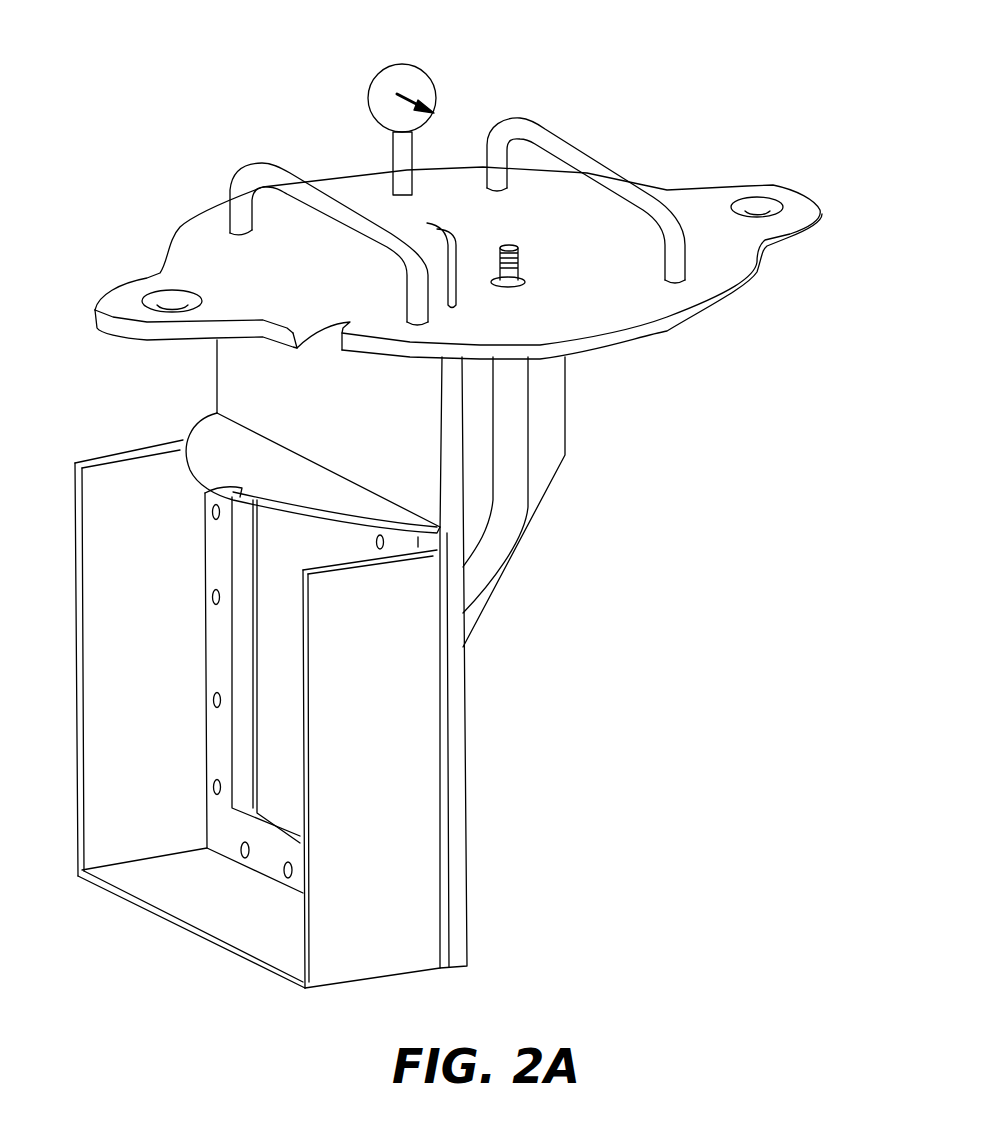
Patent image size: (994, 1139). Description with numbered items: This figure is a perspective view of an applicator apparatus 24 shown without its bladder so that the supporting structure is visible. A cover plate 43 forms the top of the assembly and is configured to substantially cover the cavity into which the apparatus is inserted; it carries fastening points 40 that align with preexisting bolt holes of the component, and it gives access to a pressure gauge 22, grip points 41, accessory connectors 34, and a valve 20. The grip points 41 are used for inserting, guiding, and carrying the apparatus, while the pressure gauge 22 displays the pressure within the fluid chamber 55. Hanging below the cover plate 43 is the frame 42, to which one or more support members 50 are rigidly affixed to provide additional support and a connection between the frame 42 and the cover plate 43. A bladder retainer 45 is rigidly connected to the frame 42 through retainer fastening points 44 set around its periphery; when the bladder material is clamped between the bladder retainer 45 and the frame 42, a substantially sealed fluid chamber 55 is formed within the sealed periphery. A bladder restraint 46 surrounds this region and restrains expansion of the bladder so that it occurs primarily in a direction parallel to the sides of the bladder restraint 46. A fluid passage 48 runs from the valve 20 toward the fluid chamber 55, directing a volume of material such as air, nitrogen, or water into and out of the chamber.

The valve 20 is at (515, 270).
The pressure gauge 22 is at (425, 75).
The applicator apparatus 24 is at (646, 44).
The accessory connectors 34 is at (445, 248).
The fastening points 40 is at (172, 297).
The grip points 41 is at (597, 162).
The frame 42 is at (457, 773).
The cover plate 43 is at (727, 300).
The retainer fastening points 44 is at (214, 787).
The bladder retainer 45 is at (212, 822).
The bladder restraint 46 is at (116, 544).
The fluid passage 48 is at (512, 545).
The support members 50 is at (553, 411).
The fluid chamber 55 is at (262, 656).